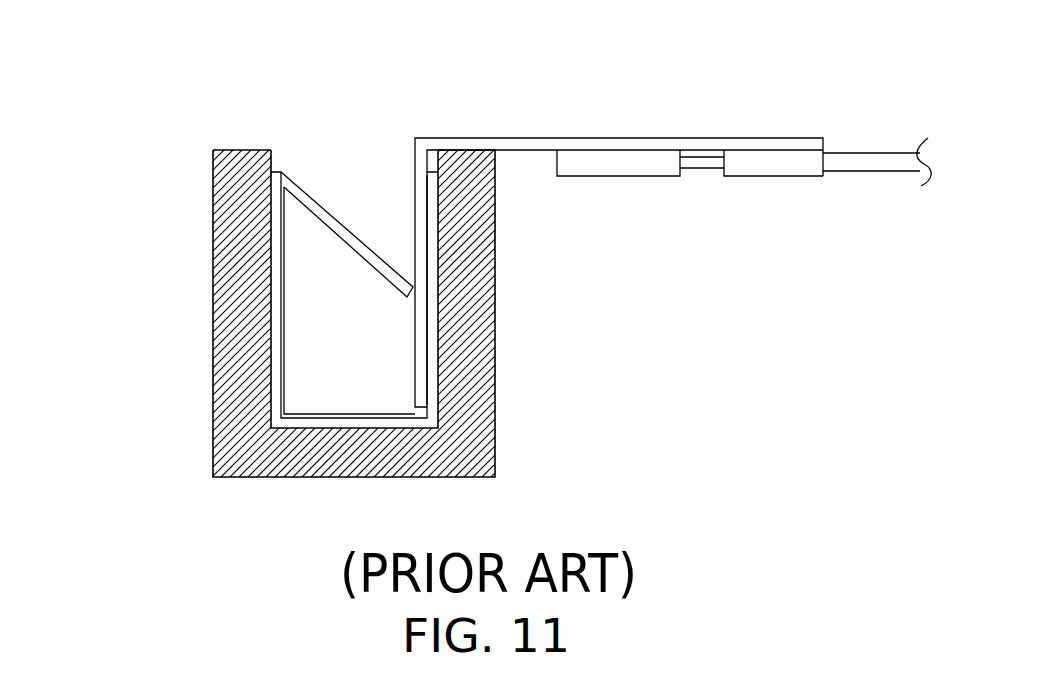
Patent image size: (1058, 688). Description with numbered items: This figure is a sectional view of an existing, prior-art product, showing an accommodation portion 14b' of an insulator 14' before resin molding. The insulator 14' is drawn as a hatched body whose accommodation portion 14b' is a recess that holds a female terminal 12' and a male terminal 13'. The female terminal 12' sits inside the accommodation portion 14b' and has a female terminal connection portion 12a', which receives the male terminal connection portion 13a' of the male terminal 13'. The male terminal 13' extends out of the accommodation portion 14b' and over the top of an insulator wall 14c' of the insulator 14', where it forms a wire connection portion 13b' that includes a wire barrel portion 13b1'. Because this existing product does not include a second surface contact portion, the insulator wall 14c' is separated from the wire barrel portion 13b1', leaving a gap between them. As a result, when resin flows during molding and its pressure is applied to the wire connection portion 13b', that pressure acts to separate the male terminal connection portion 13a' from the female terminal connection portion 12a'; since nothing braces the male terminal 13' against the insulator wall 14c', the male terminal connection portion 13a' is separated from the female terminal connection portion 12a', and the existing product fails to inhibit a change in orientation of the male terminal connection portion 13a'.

The insulator 14' is at (411, 256).
The accommodation portion 14b' is at (350, 221).
The insulator wall 14c' is at (411, 329).
The female terminal 12' is at (263, 295).
The female terminal connection portion 12a' is at (393, 293).
The male terminal 13' is at (401, 77).
The male terminal connection portion 13a' is at (355, 279).
The wire connection portion 13b' is at (680, 117).
The wire barrel portion 13b1' is at (652, 199).